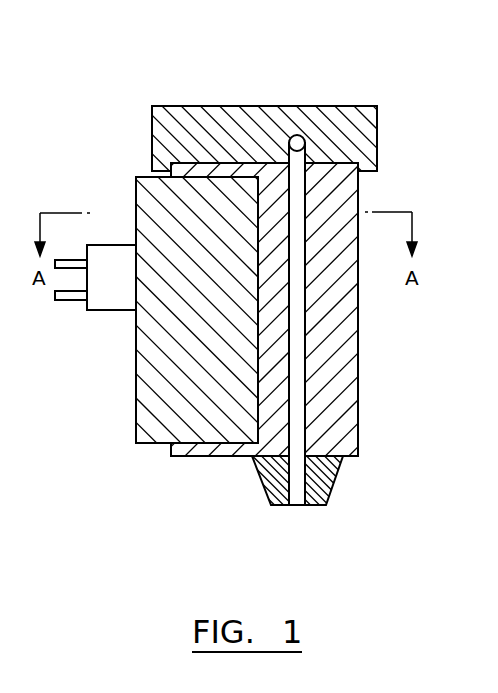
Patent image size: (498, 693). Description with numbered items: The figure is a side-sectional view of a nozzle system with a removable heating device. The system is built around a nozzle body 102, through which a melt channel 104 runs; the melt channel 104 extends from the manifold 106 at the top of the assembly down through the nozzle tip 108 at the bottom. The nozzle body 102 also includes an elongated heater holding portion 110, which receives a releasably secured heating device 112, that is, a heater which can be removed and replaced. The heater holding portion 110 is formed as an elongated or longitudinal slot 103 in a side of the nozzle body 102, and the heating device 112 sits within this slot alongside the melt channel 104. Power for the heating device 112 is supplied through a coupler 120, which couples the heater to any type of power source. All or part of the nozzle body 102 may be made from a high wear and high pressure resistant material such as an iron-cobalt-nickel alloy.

The nozzle body 102 is at (335, 310).
The longitudinal slot 103 is at (215, 447).
The melt channel 104 is at (300, 367).
The manifold 106 is at (220, 120).
The nozzle tip 108 is at (334, 482).
The heater holding portion 110 is at (172, 447).
The heating device 112 is at (176, 374).
The coupler 120 is at (98, 307).